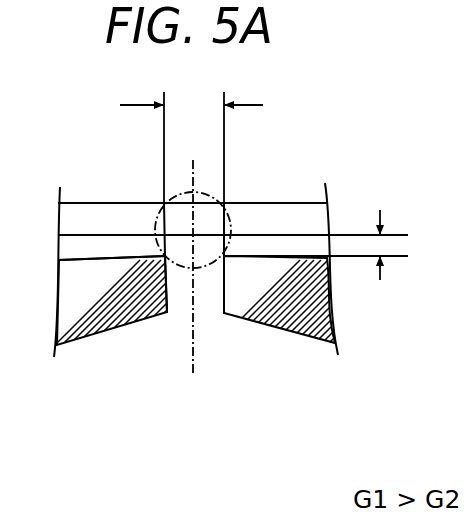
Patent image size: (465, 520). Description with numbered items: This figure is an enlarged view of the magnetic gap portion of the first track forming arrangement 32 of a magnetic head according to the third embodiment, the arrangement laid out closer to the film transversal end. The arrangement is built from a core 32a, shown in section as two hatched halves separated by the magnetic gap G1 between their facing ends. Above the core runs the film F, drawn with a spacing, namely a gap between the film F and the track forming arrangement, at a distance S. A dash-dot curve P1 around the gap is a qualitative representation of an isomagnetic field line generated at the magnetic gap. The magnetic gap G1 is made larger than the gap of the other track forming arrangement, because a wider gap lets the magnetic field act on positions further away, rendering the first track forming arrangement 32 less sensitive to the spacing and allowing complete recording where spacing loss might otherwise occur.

The first track forming arrangement 32 is at (337, 423).
The core 32a is at (117, 323).
The isomagnetic field line P1 is at (215, 194).
The film F is at (281, 215).
The magnetic gap G1 is at (191, 138).
The spacing distance S is at (404, 245).